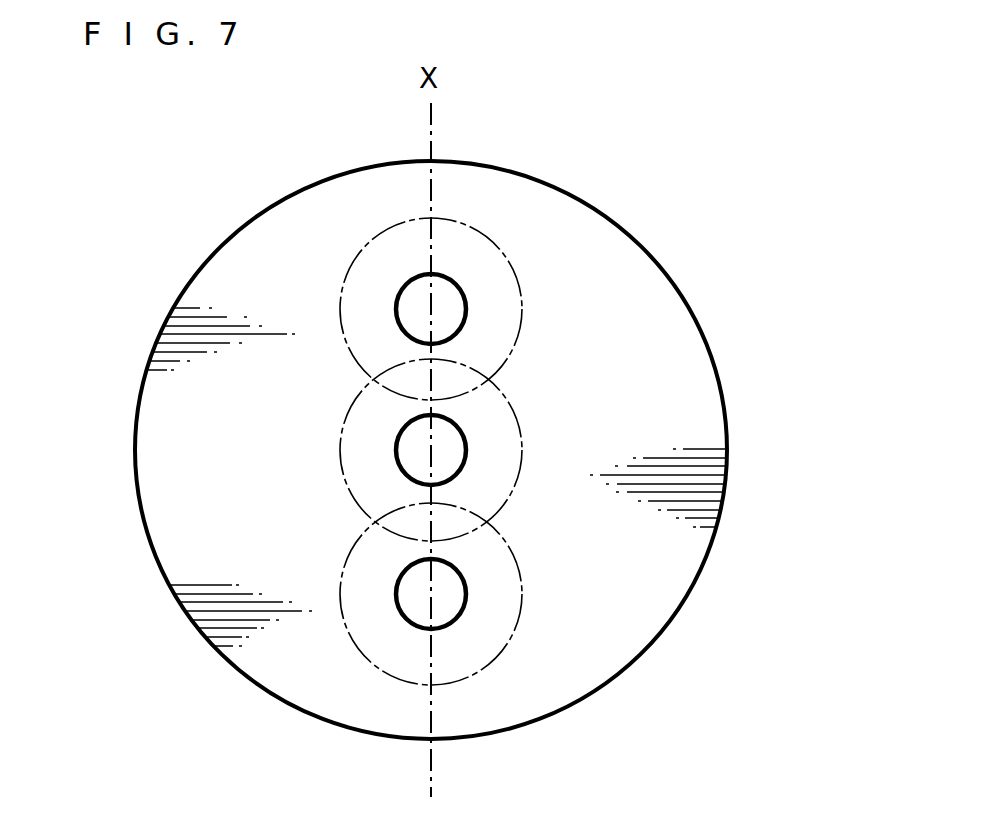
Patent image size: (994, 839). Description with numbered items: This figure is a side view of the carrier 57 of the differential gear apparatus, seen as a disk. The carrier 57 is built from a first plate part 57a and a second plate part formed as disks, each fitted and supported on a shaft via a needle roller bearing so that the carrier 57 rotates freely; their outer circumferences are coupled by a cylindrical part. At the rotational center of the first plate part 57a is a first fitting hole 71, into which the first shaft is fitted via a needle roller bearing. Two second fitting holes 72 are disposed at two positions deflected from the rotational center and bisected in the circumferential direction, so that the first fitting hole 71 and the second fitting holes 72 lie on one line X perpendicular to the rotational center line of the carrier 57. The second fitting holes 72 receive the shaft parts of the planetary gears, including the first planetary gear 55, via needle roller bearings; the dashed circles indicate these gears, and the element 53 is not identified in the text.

The cylinder block 53 is at (340, 450).
The first planetary gear 55 is at (353, 258).
The carrier 57 is at (540, 178).
The first plate part 57a is at (594, 226).
The first fitting hole 71 is at (462, 441).
The second fitting hole 72 is at (462, 300).